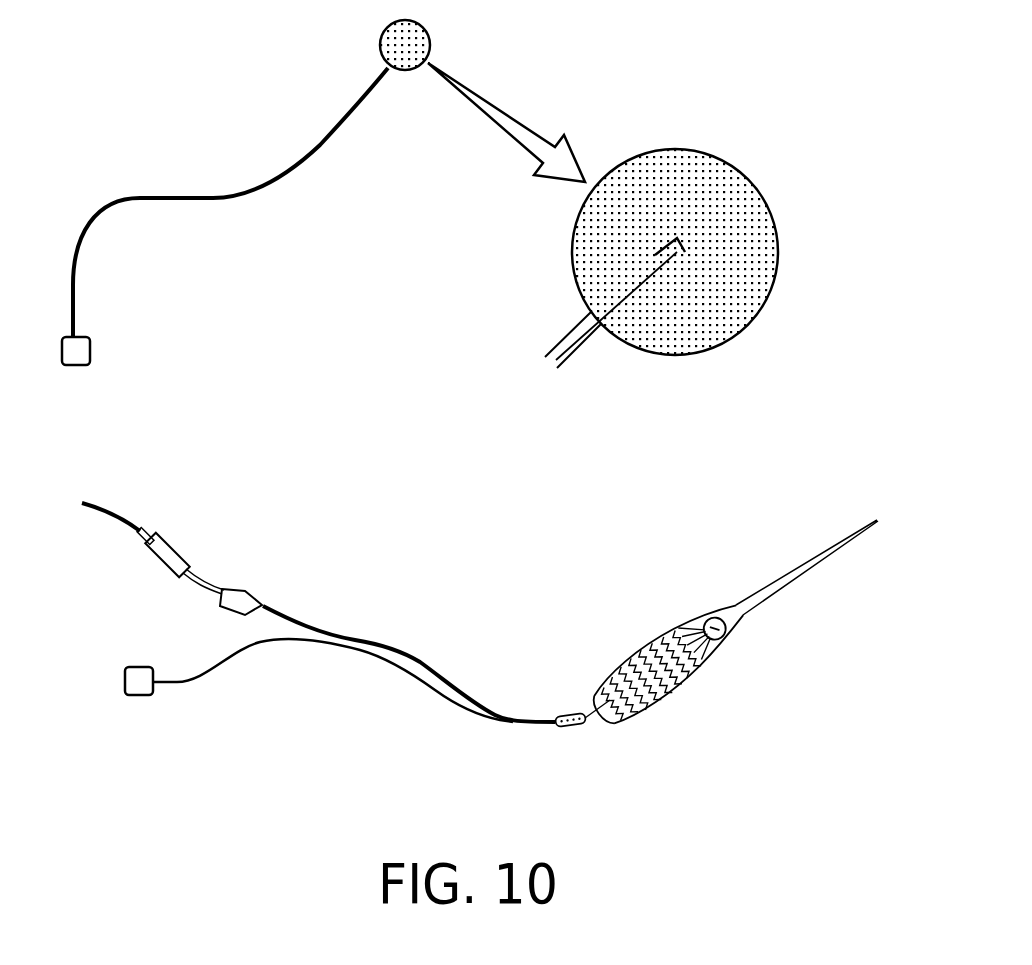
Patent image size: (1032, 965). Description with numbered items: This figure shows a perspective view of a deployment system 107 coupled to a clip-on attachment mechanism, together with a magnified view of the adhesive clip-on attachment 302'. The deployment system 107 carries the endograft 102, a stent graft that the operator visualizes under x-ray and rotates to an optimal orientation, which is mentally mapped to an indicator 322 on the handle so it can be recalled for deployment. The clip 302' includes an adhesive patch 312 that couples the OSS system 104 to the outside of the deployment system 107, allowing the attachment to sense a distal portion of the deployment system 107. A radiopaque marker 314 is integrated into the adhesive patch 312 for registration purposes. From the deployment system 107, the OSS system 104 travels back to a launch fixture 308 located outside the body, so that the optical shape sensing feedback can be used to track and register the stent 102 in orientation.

The endograft 102 is at (677, 692).
The OSS system 104 is at (262, 173).
The deployment system 107 is at (253, 566).
The adhesive clip-on attachment 302' is at (636, 373).
The launch fixture 308 is at (90, 351).
The adhesive patch 312 is at (766, 197).
The radiopaque marker 314 is at (672, 243).
The indicator 322 is at (272, 614).